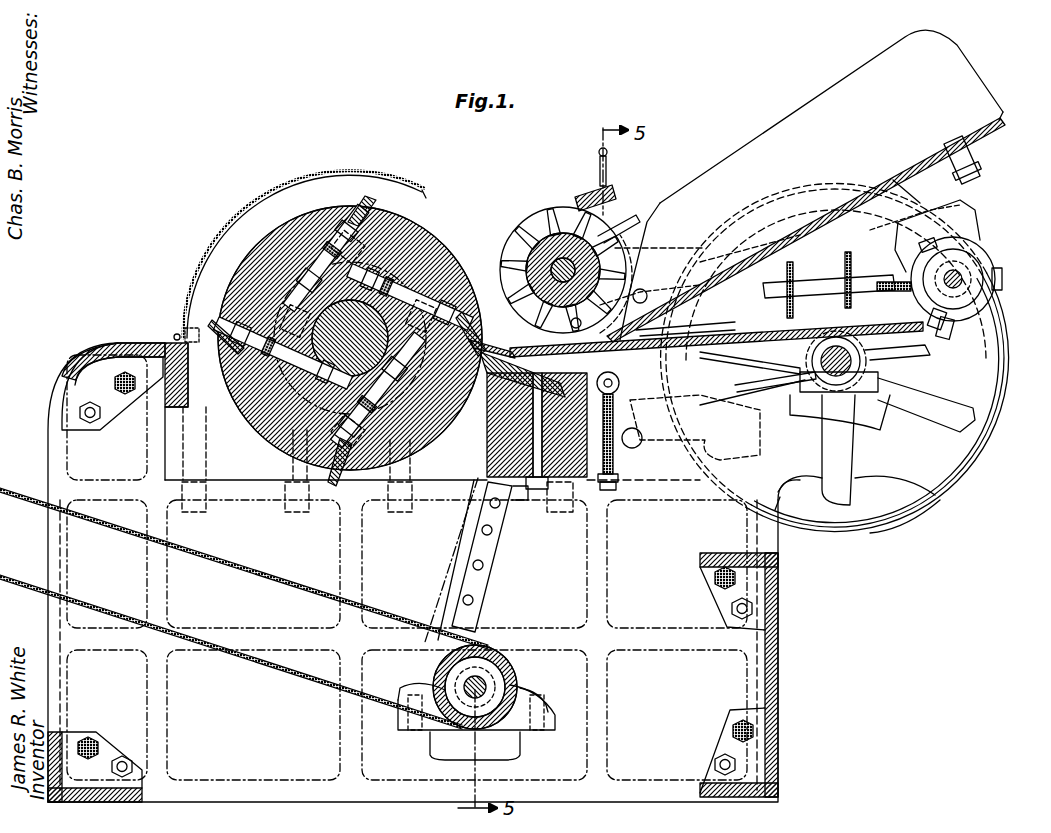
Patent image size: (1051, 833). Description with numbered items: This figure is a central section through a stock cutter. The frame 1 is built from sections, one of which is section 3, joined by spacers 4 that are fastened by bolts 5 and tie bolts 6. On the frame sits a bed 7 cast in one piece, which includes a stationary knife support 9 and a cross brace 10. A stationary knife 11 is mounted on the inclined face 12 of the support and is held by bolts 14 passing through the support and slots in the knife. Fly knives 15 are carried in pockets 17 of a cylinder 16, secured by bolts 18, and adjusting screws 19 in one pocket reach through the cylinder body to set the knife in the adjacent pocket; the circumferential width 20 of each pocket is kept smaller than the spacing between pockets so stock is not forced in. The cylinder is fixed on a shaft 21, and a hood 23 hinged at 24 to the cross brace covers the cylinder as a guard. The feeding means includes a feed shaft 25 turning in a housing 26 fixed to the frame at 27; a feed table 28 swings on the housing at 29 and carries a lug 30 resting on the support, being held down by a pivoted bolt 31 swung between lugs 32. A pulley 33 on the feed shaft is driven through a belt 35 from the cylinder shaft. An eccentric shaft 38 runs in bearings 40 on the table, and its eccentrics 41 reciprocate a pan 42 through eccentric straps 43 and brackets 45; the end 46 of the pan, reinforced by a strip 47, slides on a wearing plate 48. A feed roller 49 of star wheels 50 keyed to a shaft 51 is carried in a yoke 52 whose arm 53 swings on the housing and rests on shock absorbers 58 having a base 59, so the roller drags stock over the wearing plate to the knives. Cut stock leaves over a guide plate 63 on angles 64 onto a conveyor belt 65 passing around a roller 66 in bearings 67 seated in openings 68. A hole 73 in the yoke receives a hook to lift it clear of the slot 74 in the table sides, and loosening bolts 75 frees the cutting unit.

The frame 1 is at (40, 462).
The section 3 is at (740, 665).
The spacer 4 is at (100, 356).
The bolt 5 is at (90, 420).
The tie bolt 6 is at (115, 383).
The bed 7 is at (288, 455).
The stationary knife support 9 is at (492, 436).
The cross brace 10 is at (168, 395).
The stationary knife 11 is at (490, 395).
The inclined face 12 is at (500, 350).
The bolt 14 is at (535, 490).
The fly knife 15 is at (370, 212).
The cylinder 16 is at (300, 245).
The pocket 17 is at (392, 246).
The bolt 18 is at (322, 216).
The adjusting screw 19 is at (345, 268).
The circumferential width 20 is at (378, 240).
The shaft 21 is at (428, 262).
The hood 23 is at (245, 218).
The hinge 24 is at (175, 334).
The feed shaft 25 is at (890, 352).
The housing 26 is at (880, 372).
The fixing point 27 is at (950, 410).
The feed table 28 is at (708, 392).
The mounting 29 is at (838, 390).
The lug 30 is at (580, 360).
The pivoted bolt 31 is at (610, 490).
The lug 32 is at (620, 480).
The pulley 33 is at (890, 510).
The belt 35 is at (665, 196).
The eccentric shaft 38 is at (963, 275).
The bearing 40 is at (1000, 272).
The eccentric 41 is at (958, 332).
The pan 42 is at (985, 105).
The eccentric strap 43 is at (968, 248).
The bracket 45 is at (820, 225).
The end of pan 46 is at (640, 289).
The strip 47 is at (685, 325).
The wearing plate 48 is at (589, 315).
The feed roller 49 is at (559, 246).
The star wheel 50 is at (532, 232).
The shaft 51 is at (603, 232).
The yoke 52 is at (585, 196).
The arm 53 is at (719, 412).
The shock absorber 58 is at (620, 380).
The base 59 is at (690, 418).
The guide plate 63 is at (450, 560).
The angle 64 is at (480, 582).
The conveyor belt 65 is at (300, 585).
The roller 66 is at (500, 660).
The bearing 67 is at (546, 714).
The opening 68 is at (412, 690).
The hole 73 is at (608, 178).
The slot 74 is at (700, 246).
The bolt 75 is at (388, 536).